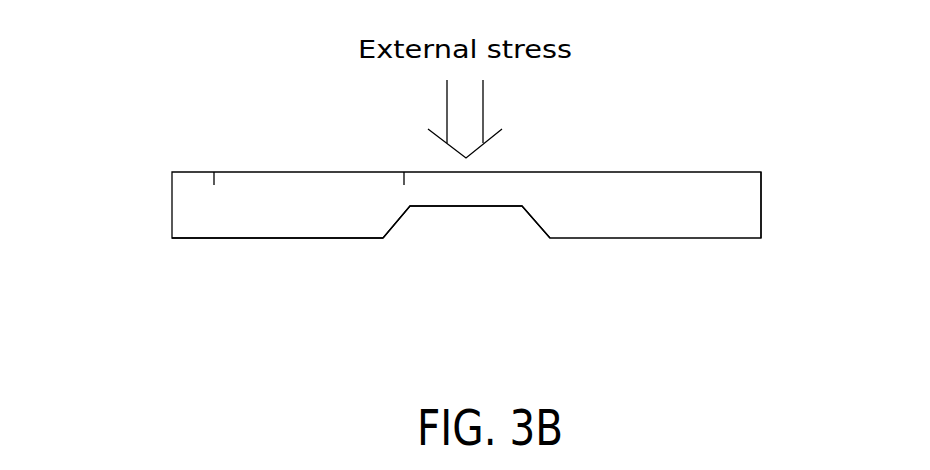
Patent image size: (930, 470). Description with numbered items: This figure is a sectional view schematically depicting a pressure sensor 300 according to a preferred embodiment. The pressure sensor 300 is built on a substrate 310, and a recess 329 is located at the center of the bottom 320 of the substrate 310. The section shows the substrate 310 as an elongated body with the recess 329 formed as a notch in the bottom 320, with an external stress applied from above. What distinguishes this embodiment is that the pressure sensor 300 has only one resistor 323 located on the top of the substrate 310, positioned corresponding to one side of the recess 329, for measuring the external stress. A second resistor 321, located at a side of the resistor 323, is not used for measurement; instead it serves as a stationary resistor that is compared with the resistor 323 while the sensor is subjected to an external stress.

The pressure sensor 300 is at (145, 205).
The substrate 310 is at (742, 209).
The bottom 320 is at (247, 239).
The resistor 321 is at (213, 170).
The resistor 323 is at (403, 163).
The recess 329 is at (470, 220).